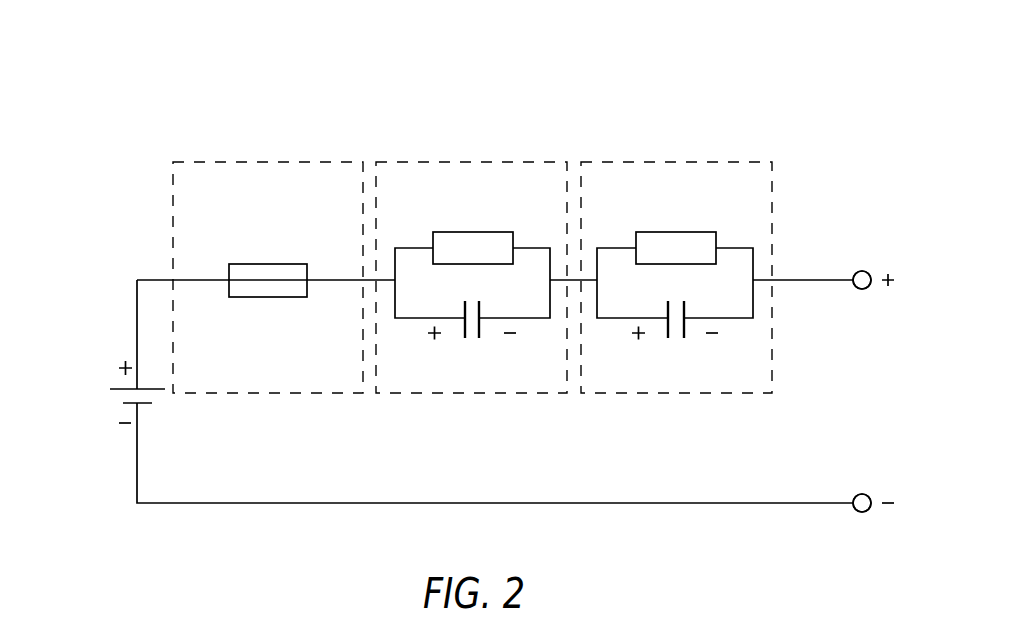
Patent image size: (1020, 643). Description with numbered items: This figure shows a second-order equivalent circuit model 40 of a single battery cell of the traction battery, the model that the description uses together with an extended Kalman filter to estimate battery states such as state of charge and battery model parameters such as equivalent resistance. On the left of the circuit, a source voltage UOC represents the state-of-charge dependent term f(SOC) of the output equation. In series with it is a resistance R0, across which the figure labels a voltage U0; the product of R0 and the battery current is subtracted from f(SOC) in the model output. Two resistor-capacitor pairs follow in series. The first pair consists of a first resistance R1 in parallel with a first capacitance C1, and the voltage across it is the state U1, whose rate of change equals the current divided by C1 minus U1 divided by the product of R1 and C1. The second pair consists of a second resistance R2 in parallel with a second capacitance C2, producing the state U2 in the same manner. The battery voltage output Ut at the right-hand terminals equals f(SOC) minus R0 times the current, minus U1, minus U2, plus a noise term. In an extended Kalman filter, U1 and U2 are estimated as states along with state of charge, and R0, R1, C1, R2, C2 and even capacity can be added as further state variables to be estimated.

The second-order equivalent circuit model 40 is at (756, 104).
The resistance R0 is at (268, 258).
The voltage across ohmic resistance U0 is at (268, 314).
The first resistance R1 is at (472, 232).
The first capacitance C1 is at (472, 333).
The first voltage state U1 is at (495, 305).
The second resistance R2 is at (675, 232).
The second capacitance C2 is at (675, 333).
The second voltage state U2 is at (698, 305).
The open circuit voltage source UOC is at (108, 392).
The battery voltage output Ut is at (861, 391).